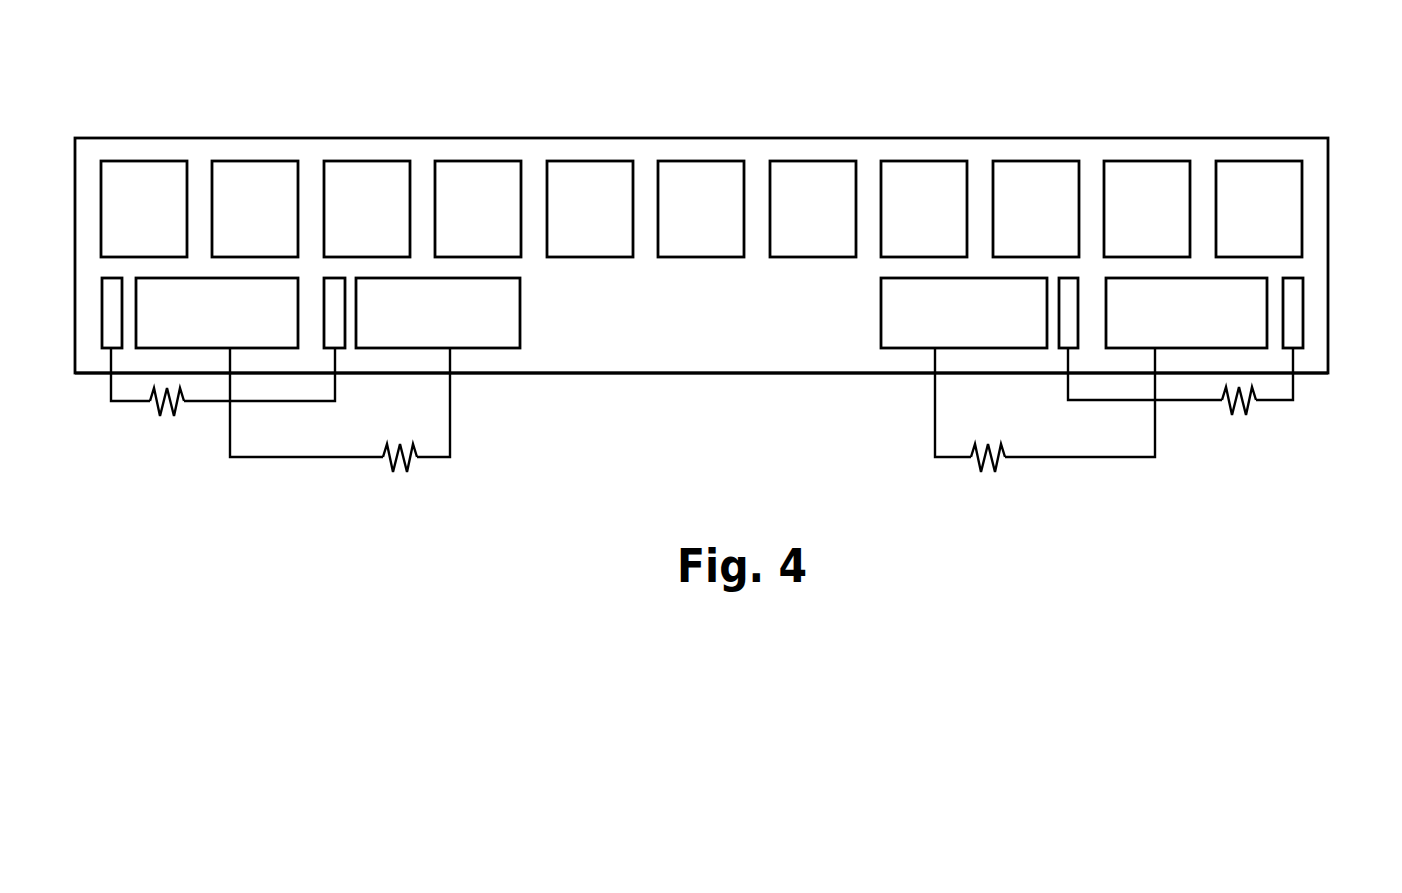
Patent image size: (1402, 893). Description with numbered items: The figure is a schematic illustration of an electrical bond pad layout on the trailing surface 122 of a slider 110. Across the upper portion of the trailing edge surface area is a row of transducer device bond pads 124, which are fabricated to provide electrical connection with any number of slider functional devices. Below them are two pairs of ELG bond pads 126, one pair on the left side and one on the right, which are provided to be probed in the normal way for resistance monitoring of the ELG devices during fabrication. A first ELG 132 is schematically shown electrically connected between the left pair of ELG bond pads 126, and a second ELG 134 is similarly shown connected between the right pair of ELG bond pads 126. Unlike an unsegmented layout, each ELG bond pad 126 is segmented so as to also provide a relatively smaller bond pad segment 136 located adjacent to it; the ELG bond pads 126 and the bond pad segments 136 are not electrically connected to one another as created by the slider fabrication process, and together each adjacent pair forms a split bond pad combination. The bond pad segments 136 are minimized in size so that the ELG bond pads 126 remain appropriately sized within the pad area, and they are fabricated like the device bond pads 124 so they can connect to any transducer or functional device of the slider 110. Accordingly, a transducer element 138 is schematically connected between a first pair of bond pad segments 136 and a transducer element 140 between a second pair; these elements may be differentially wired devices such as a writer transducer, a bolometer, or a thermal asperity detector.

The slider 110 is at (643, 117).
The trailing surface 122 is at (545, 373).
The transducer device bond pads 124 is at (573, 178).
The ELG bond pads 126 is at (203, 331).
The first ELG 132 is at (365, 458).
The second ELG 134 is at (1043, 458).
The bond pad segments 136 is at (108, 317).
The transducer element 138 is at (155, 390).
The transducer element 140 is at (1240, 390).